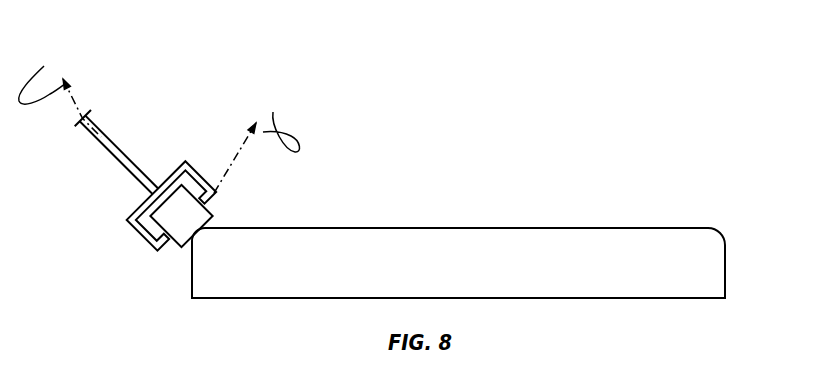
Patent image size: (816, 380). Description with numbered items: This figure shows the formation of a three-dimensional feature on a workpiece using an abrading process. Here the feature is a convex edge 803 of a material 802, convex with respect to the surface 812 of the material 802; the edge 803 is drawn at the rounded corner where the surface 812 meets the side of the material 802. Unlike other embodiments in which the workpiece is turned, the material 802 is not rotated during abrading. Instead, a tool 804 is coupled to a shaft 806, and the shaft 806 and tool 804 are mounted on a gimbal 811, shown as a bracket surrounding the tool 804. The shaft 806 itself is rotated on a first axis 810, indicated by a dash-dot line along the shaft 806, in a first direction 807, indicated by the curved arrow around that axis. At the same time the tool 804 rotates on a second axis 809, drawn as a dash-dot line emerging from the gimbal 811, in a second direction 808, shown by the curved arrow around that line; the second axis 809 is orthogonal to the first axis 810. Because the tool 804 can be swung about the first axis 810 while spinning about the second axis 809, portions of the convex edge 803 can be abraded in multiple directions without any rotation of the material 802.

The material 802 is at (727, 248).
The convex edge 803 is at (206, 234).
The tool 804 is at (214, 215).
The shaft 806 is at (106, 136).
The first direction 807 is at (44, 66).
The second direction 808 is at (287, 125).
The second axis 809 is at (250, 152).
The first axis 810 is at (66, 88).
The gimbal 811 is at (186, 163).
The surface 812 is at (370, 227).